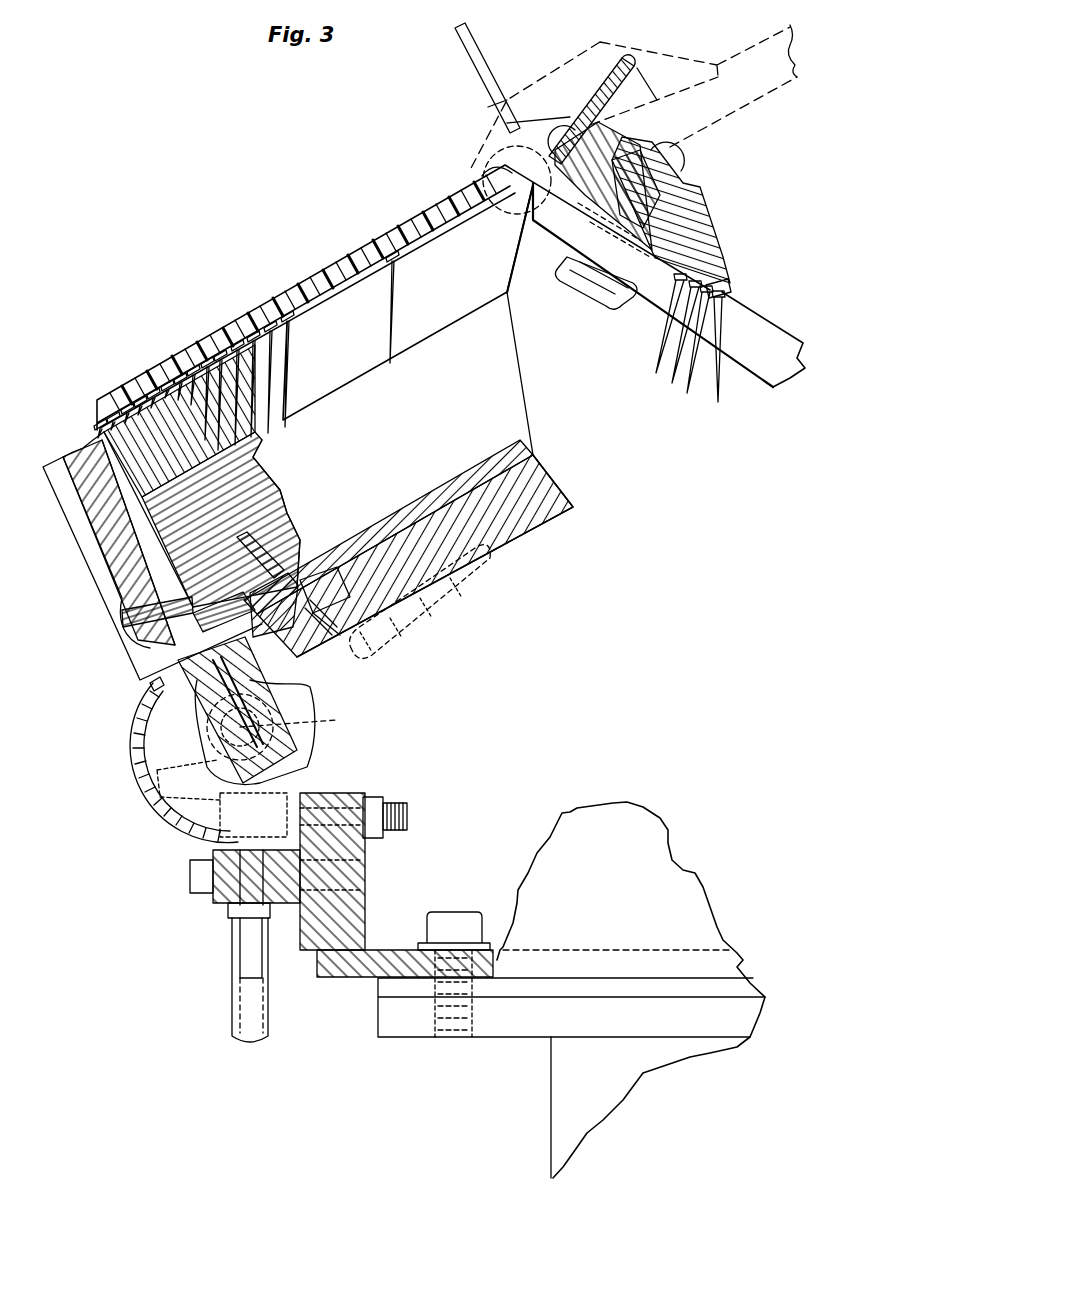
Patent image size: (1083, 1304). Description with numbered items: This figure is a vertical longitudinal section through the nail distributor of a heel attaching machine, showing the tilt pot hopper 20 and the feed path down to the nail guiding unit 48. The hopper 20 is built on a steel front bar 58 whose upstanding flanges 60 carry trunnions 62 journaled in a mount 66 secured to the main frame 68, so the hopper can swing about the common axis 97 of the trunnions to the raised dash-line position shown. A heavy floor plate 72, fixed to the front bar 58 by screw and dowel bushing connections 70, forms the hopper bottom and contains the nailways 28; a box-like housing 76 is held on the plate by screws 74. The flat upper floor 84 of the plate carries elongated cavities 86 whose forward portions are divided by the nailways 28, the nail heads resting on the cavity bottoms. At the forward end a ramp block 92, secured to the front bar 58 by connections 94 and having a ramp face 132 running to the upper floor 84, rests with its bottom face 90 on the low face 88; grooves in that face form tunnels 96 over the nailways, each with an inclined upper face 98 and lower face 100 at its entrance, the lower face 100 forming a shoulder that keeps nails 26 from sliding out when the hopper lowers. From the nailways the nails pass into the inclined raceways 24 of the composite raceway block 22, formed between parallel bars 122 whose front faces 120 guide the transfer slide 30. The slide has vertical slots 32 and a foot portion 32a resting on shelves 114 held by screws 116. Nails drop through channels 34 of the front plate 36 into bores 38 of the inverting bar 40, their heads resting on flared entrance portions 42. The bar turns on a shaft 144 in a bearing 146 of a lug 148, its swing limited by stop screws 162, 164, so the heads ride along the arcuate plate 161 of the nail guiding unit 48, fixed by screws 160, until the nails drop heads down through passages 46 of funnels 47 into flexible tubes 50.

The tilt pot hopper 20 is at (754, 180).
The composite raceway block 22 is at (530, 409).
The inclined raceways 24 is at (312, 292).
The nails 26 is at (385, 312).
The nailways 28 is at (773, 382).
The transfer slide 30 is at (125, 618).
The vertical parallel slots 32 is at (99, 433).
The rearwardly extending foot portion 32a is at (252, 556).
The channels 34 is at (105, 477).
The front plate 36 is at (75, 527).
The bores 38 is at (258, 700).
The inverting bar 40 is at (305, 752).
The flared entrance portions 42 is at (168, 684).
The passages 46 is at (240, 965).
The funnels 47 is at (225, 908).
The nail guiding unit 48 is at (139, 865).
The flexible tubes 50 is at (232, 1008).
The front bar 58 is at (600, 214).
The upstanding flanges 60 is at (527, 240).
The trunnions 62 is at (495, 152).
The mount 66 is at (627, 802).
The main frame 68 is at (551, 1115).
The screw and dowel bushing connections 70 is at (640, 170).
The floor plate 72 is at (743, 362).
The screws 74 is at (565, 130).
The box-like housing 76 is at (622, 60).
The upper floor 84 is at (755, 300).
The elongated cavities 86 is at (793, 345).
The low face 88 is at (670, 282).
The bottom face 90 is at (663, 282).
The ramp block 92 is at (690, 185).
The screw and dowel bushing connections 94 is at (680, 158).
The tunnels 96 is at (600, 292).
The common axis 97 is at (486, 178).
The upper face 98 is at (733, 290).
The lower face 100 is at (722, 282).
The shelves 114 is at (300, 560).
The screws 116 is at (290, 520).
The front faces 120 is at (118, 440).
The parallel bars 122 is at (185, 378).
The ramp face 132 is at (729, 229).
The shaft 144 is at (290, 727).
The bearing 146 is at (275, 707).
The lug 148 is at (203, 733).
The screws 160 is at (362, 895).
The arcuate plate 161 is at (150, 745).
The stop screw 162 is at (288, 657).
The stop screw 164 is at (340, 800).